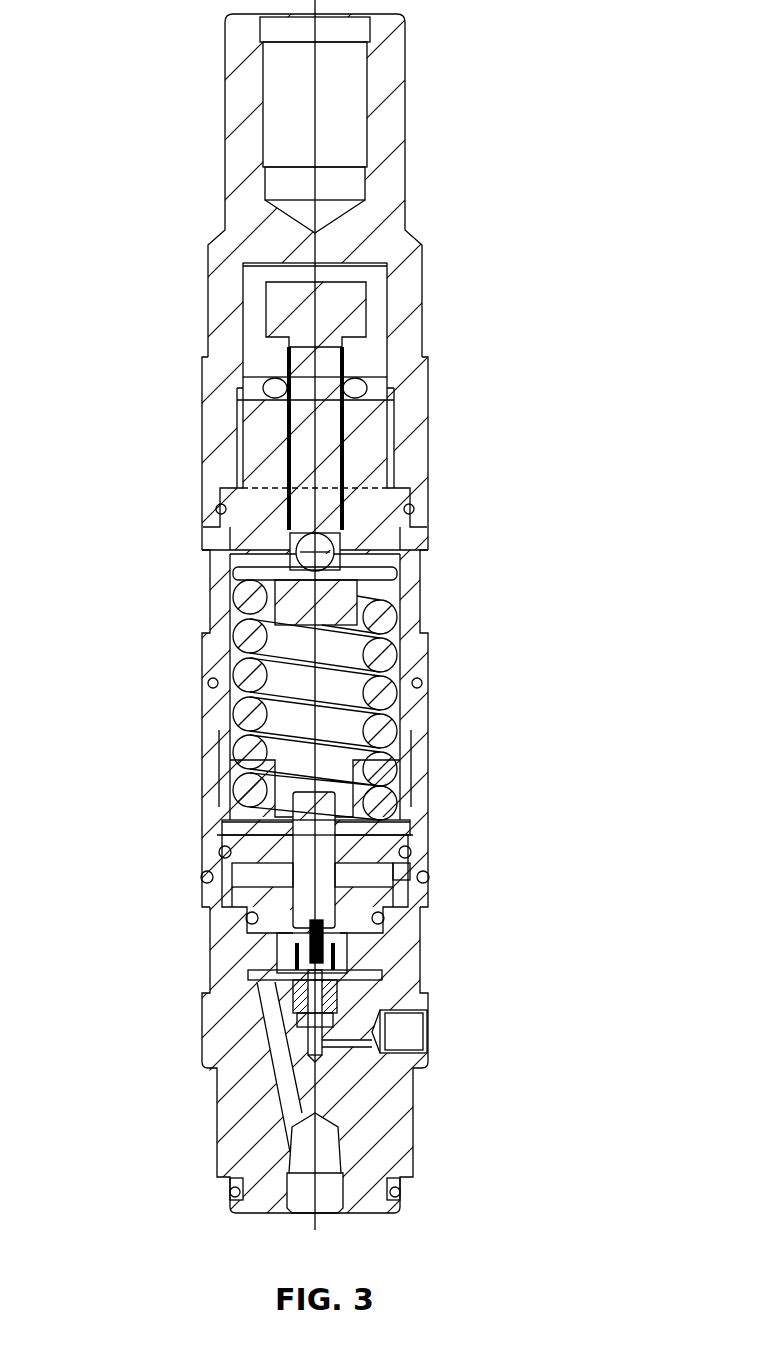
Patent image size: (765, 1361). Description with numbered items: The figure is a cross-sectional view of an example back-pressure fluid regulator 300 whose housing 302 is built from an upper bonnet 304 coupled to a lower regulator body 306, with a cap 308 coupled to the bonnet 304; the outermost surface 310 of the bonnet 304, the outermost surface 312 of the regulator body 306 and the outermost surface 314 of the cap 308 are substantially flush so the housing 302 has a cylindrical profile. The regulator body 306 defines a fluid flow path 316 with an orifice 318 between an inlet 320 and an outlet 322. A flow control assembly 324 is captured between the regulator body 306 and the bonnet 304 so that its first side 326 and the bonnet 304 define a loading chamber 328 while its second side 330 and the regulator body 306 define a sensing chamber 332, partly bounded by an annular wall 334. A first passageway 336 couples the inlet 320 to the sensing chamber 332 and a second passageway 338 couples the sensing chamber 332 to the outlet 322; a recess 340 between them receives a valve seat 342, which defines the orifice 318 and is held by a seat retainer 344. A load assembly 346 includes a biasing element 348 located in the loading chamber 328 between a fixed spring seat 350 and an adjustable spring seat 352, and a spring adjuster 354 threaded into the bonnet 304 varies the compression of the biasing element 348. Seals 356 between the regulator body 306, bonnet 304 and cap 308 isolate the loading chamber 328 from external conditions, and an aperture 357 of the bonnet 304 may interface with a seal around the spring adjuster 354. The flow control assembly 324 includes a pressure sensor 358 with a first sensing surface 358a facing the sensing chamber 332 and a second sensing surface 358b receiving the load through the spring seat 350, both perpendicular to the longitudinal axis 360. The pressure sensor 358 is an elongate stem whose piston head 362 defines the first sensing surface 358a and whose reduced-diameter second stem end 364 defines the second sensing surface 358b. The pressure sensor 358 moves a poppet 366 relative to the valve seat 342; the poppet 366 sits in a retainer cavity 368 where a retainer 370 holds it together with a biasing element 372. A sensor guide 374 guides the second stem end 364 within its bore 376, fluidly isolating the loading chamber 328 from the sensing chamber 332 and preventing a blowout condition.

The fluid regulator 300 is at (457, 54).
The housing 302 is at (532, 512).
The bonnet 304 is at (421, 580).
The regulator body 306 is at (413, 1155).
The cap 308 is at (420, 340).
The outermost surface of the bonnet 310 is at (202, 533).
The outermost surface of the regulator body 312 is at (202, 1035).
The outermost surface of the cap 314 is at (427, 405).
The fluid flow path 316 is at (222, 1105).
The orifice 318 is at (385, 978).
The inlet 320 is at (297, 1213).
The outlet 322 is at (430, 1023).
The flow control assembly 324 is at (421, 897).
The first side of the flow control assembly 326 is at (284, 773).
The loading chamber 328 is at (425, 727).
The second side of the flow control assembly 330 is at (255, 997).
The sensing chamber 332 is at (347, 965).
The annular wall 334 is at (372, 915).
The first passageway 336 is at (222, 1158).
The second passageway 338 is at (410, 1092).
The recess 340 is at (256, 1065).
The valve seat 342 is at (242, 1083).
The seat retainer 344 is at (325, 985).
The load assembly 346 is at (374, 479).
The biasing element 348 is at (382, 690).
The fixed spring seat 350 is at (340, 810).
The adjustable spring seat 352 is at (341, 602).
The spring adjuster 354 is at (358, 307).
The seals 356 is at (410, 509).
The aperture 357 is at (283, 432).
The pressure sensor 358 is at (248, 905).
The first pressure sensing surface 358a is at (330, 948).
The second pressure sensing surface 358b is at (392, 752).
The longitudinal axis 360 is at (318, 1218).
The piston head 362 is at (255, 975).
The second stem end 364 is at (290, 822).
The poppet 366 is at (258, 1008).
The retainer cavity 368 is at (270, 962).
The retainer 370 is at (277, 937).
The biasing element 372 is at (262, 873).
The sensor guide 374 is at (420, 836).
The bore 376 is at (411, 866).